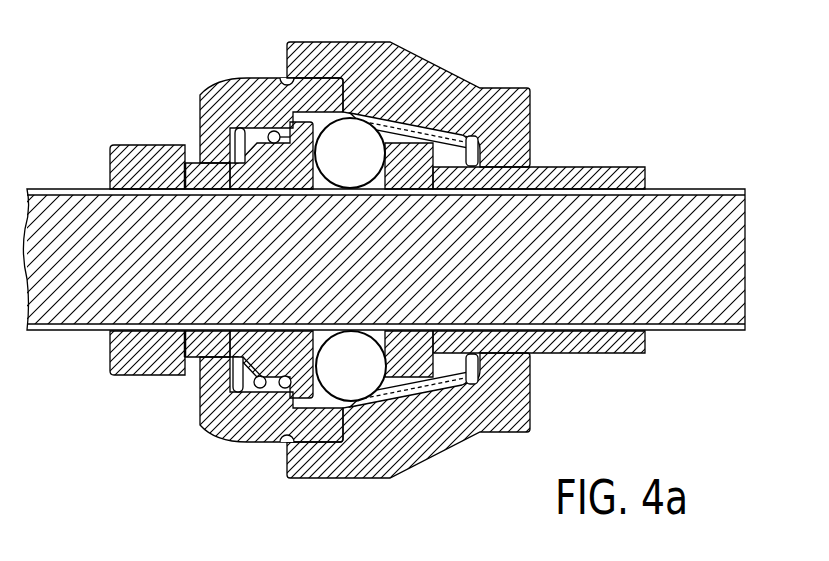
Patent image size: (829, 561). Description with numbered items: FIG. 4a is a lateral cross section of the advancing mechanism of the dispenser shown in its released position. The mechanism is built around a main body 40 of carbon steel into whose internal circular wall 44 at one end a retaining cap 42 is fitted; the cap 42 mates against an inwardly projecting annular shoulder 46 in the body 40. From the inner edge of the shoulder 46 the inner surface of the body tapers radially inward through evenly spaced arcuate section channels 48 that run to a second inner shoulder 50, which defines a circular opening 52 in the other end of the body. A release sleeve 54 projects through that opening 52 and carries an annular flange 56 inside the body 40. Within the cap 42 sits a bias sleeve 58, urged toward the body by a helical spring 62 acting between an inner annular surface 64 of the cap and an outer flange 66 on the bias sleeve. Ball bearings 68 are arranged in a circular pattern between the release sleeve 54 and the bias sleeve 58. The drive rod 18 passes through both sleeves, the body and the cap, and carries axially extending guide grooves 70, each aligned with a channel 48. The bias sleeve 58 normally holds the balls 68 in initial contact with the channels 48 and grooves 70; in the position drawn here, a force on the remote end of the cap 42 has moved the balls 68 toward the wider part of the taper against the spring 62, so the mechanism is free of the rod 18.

The drive rod 18 is at (691, 260).
The main body 40 is at (425, 52).
The retaining cap 42 is at (240, 82).
The internal circular wall 44 is at (274, 77).
The inwardly projecting annular shoulder 46 is at (349, 117).
The arcuate section channels 48 is at (445, 158).
The second inner shoulder 50 is at (477, 150).
The circular opening 52 is at (532, 353).
The release sleeve 54 is at (622, 168).
The annular flange 56 is at (417, 367).
The bias sleeve 58 is at (200, 377).
The helical spring 62 is at (236, 145).
The inner annular surface 64 is at (240, 134).
The outer flange 66 is at (287, 411).
The ball bearings 68 is at (380, 394).
The guide grooves 70 is at (693, 189).